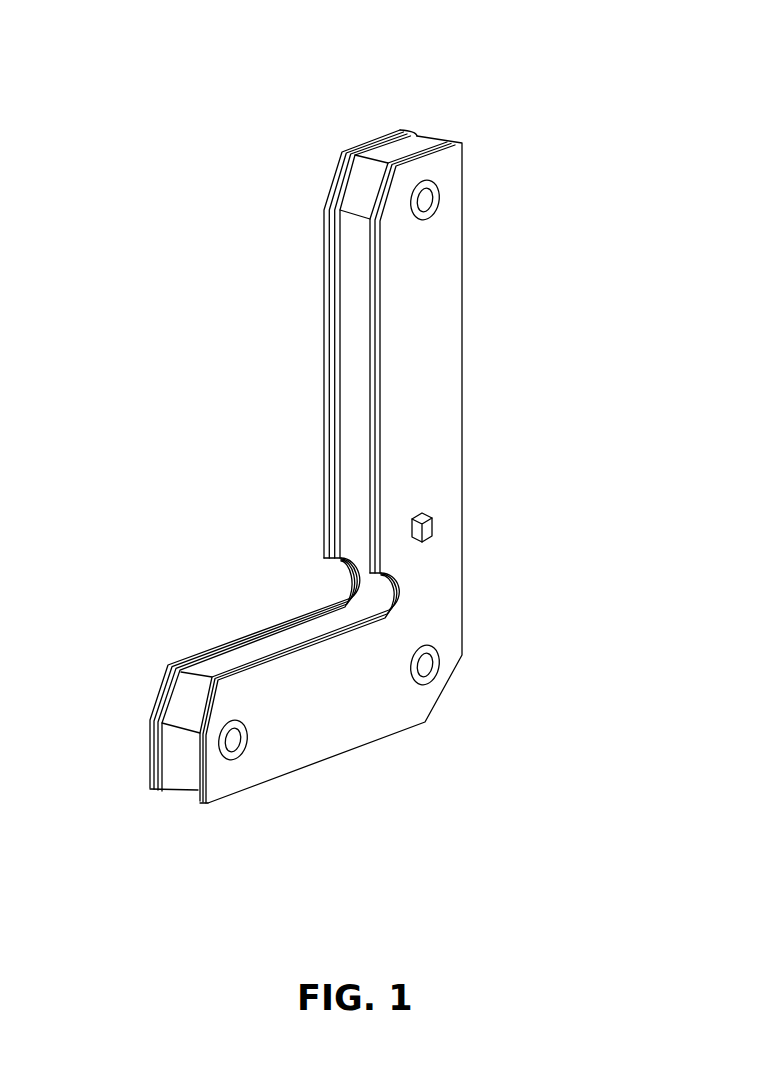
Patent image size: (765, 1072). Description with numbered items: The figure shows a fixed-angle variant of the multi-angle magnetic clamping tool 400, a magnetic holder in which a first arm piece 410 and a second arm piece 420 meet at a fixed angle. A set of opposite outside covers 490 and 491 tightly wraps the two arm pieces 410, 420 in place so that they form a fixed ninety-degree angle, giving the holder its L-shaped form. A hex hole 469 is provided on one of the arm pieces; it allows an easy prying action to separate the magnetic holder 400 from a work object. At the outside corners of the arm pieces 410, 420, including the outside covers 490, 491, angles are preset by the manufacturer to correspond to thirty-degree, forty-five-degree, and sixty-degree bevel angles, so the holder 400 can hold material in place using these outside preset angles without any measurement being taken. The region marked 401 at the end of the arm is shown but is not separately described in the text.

The multi-angle magnetic clamping tool 400 is at (337, 441).
The first arm piece 410 is at (278, 753).
The second arm piece 420 is at (410, 407).
The outside cover 490 is at (410, 126).
The beveled rail end 401 is at (427, 143).
The outside cover 491 is at (453, 145).
The hex hole 469 is at (432, 534).